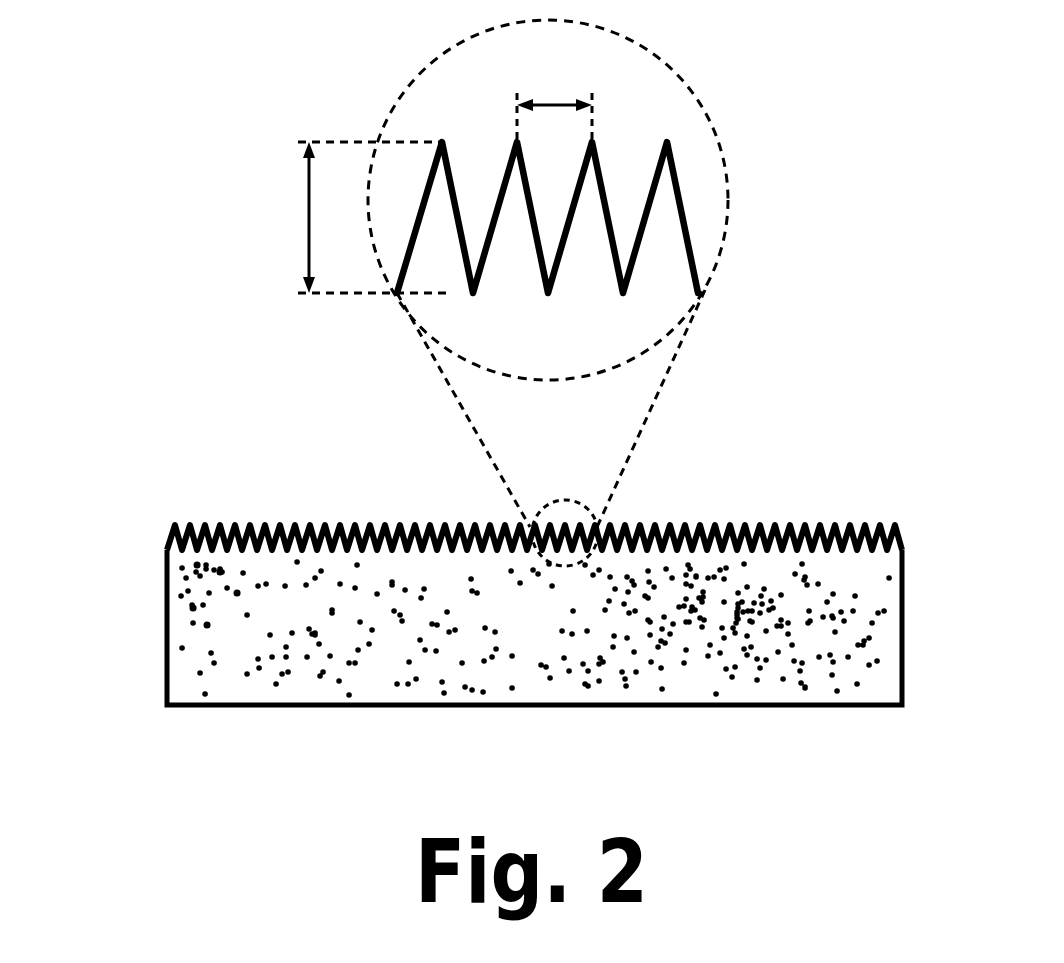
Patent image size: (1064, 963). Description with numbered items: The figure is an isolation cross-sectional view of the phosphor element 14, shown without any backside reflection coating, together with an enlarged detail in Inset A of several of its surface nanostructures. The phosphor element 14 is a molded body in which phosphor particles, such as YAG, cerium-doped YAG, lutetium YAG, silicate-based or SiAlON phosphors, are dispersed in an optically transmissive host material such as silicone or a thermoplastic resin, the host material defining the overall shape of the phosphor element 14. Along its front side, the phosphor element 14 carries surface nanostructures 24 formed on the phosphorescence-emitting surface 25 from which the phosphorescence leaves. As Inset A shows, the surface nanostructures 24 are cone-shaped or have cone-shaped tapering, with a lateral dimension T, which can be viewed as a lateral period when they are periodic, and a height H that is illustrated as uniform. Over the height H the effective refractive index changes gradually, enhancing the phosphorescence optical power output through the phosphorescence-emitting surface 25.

The phosphor element 14 is at (550, 637).
The surface nanostructures 24 is at (678, 187).
The phosphorescence-emitting surface 25 is at (158, 548).
The inset A is at (673, 70).
The height H is at (371, 217).
The lateral dimension T is at (554, 98).